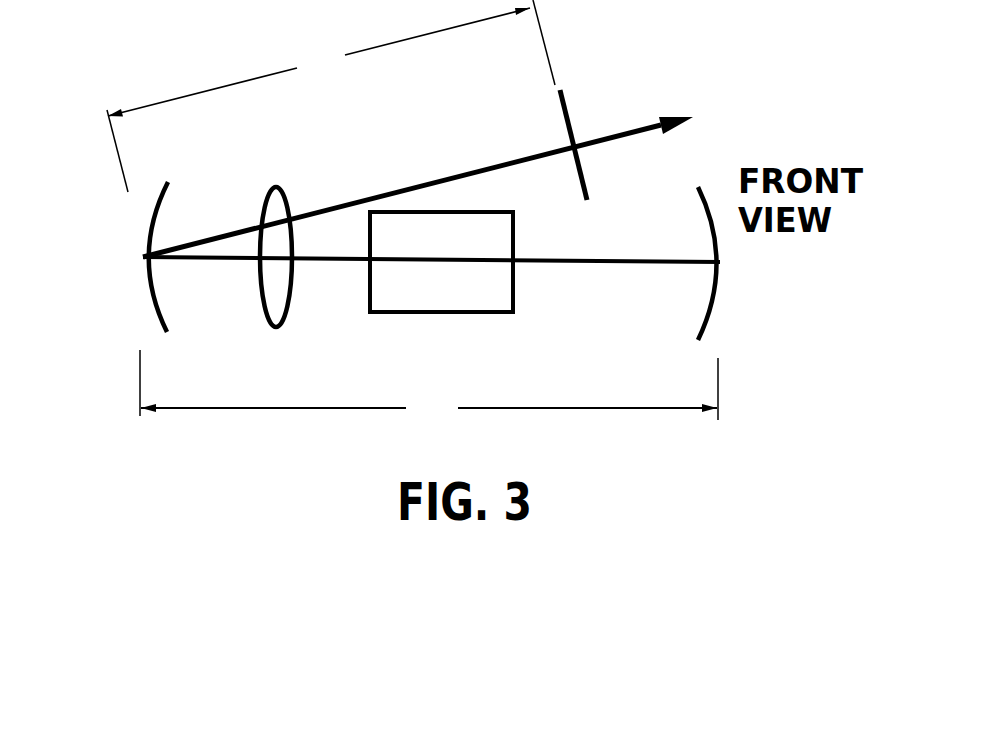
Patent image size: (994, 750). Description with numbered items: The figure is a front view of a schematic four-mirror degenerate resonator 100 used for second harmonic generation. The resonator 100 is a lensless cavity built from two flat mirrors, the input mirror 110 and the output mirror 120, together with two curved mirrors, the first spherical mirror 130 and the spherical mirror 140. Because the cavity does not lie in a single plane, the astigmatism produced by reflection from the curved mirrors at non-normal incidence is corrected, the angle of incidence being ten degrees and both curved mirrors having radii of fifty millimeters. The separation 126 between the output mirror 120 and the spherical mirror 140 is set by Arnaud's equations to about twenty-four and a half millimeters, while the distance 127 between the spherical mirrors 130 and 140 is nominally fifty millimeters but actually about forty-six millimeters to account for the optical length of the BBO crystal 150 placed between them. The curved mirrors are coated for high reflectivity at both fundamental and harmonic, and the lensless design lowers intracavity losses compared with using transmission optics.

The 4-mirror degenerate resonator 100 is at (118, 327).
The input mirror 110 is at (289, 312).
The output mirror 120 is at (563, 98).
The separation 126 is at (331, 96).
The distance 127 is at (429, 387).
The first spherical mirror 130 is at (703, 325).
The spherical mirror 140 is at (160, 312).
The BBO crystal 150 is at (438, 313).